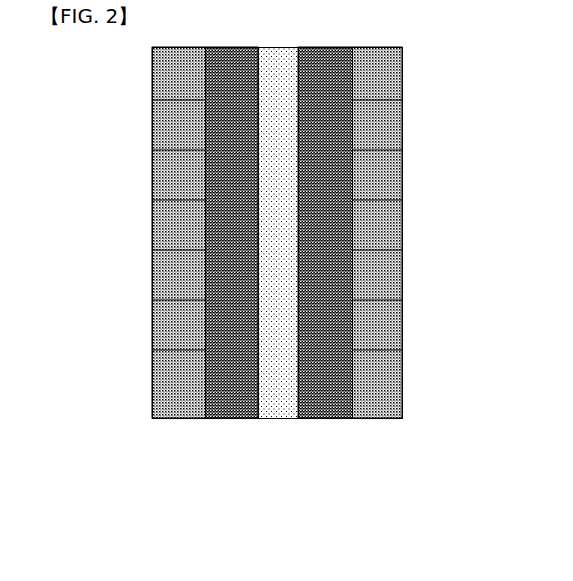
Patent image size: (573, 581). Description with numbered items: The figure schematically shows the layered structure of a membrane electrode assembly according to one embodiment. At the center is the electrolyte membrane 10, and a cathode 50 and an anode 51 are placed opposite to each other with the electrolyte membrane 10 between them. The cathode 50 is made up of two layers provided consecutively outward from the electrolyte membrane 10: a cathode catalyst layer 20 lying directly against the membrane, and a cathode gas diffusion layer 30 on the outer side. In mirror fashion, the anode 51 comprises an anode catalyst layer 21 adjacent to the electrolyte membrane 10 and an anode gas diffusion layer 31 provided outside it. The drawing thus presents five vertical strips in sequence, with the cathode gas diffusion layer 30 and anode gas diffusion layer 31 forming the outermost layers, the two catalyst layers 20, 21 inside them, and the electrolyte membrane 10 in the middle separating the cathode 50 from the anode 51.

The electrolyte membrane 10 is at (279, 418).
The cathode catalyst layer 20 is at (229, 418).
The anode catalyst layer 21 is at (327, 418).
The cathode gas diffusion layer 30 is at (176, 418).
The anode gas diffusion layer 31 is at (380, 418).
The cathode 50 is at (132, 512).
The anode 51 is at (340, 512).